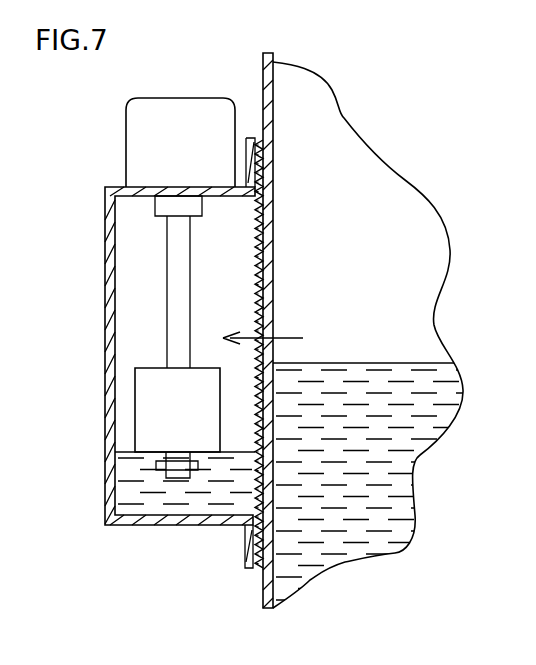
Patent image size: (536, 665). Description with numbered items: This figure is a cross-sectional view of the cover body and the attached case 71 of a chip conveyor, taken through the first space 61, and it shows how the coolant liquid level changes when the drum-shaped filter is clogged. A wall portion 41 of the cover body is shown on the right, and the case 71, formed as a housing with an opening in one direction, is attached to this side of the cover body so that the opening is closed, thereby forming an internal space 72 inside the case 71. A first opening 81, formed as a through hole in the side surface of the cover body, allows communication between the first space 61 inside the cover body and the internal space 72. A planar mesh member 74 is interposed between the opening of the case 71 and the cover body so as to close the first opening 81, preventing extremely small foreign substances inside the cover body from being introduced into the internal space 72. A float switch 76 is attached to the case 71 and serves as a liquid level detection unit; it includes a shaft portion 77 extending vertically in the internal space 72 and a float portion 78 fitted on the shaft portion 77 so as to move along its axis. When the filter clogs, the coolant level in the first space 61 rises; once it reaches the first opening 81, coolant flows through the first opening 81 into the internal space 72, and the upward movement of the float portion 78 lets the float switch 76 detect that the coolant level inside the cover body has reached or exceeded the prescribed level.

The tank wall 41 is at (262, 87).
The first space 61 is at (408, 345).
The case 71 is at (108, 240).
The internal space 72 is at (138, 286).
The mesh member 74 is at (253, 487).
The float switch 76 is at (190, 82).
The shaft portion 77 is at (178, 332).
The float portion 78 is at (153, 409).
The first opening 81 is at (270, 315).